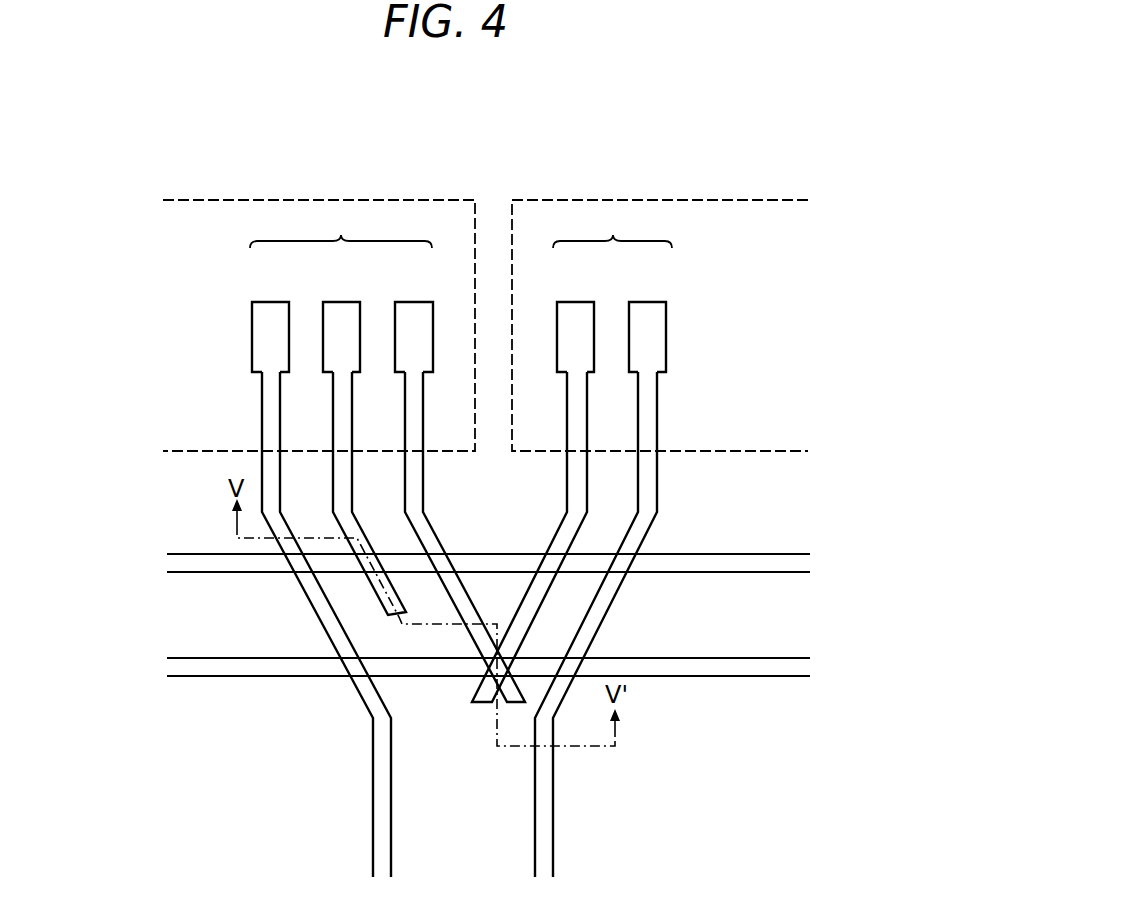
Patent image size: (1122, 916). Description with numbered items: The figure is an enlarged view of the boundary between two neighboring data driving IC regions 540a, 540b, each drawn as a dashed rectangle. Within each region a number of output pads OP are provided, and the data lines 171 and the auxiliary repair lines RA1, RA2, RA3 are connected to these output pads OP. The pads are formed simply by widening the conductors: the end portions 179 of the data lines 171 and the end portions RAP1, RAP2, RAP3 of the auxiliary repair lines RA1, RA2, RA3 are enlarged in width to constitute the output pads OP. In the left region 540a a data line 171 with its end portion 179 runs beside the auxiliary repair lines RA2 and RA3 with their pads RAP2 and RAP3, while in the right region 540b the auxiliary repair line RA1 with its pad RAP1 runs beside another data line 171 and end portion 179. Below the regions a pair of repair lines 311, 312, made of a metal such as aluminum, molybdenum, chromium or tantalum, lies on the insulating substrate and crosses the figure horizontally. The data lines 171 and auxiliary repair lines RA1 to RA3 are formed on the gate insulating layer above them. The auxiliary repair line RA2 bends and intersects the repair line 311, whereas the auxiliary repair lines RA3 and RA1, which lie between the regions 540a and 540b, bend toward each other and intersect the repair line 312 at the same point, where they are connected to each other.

The data driving IC region 540a is at (320, 200).
The data driving IC region 540b is at (645, 200).
The output pad OP is at (461, 227).
The end portion of data line 179 is at (252, 337).
The data line 171 is at (262, 416).
The end portion of first auxiliary repair line RAP1 is at (576, 302).
The end portion of second auxiliary repair line RAP2 is at (341, 302).
The end portion of third auxiliary repair line RAP3 is at (421, 302).
The auxiliary repair line RA1 is at (567, 428).
The auxiliary repair line RA2 is at (333, 425).
The auxiliary repair line RA3 is at (405, 425).
The repair line 311 is at (778, 553).
The repair line 312 is at (778, 657).